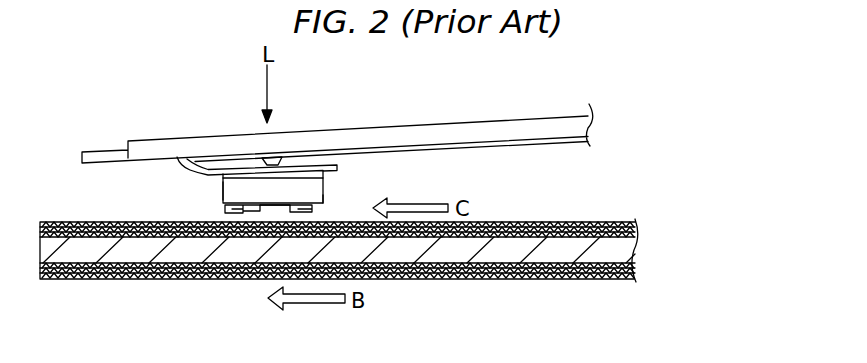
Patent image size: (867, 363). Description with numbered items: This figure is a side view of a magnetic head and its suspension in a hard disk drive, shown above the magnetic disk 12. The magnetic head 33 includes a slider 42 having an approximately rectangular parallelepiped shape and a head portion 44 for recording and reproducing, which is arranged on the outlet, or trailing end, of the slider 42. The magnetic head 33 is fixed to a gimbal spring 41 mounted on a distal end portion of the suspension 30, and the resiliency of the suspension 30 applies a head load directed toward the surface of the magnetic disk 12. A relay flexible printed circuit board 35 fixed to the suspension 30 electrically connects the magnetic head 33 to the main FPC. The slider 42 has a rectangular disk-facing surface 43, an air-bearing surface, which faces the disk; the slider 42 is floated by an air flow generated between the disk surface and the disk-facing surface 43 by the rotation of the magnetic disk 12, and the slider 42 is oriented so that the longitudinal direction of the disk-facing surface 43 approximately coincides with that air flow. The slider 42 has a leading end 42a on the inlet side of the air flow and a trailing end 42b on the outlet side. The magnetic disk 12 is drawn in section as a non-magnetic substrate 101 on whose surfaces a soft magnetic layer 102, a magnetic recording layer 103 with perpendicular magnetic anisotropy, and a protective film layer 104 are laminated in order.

The magnetic disk 12 is at (371, 243).
The suspension 30 is at (486, 123).
The magnetic head 33 is at (343, 191).
The relay flexible printed circuit board 35 is at (545, 144).
The gimbal spring 41 is at (328, 164).
The slider 42 is at (252, 184).
The leading end 42a is at (331, 186).
The trailing end 42b is at (226, 208).
The disk-facing surface 43 is at (268, 222).
The head portion 44 is at (222, 191).
The substrate 101 is at (553, 259).
The soft magnetic layer 102 is at (636, 242).
The magnetic recording layer 103 is at (575, 223).
The protective film layer 104 is at (629, 222).